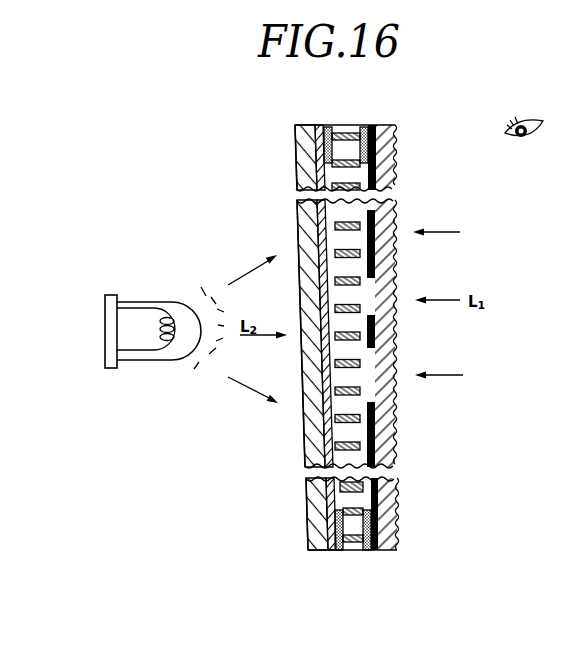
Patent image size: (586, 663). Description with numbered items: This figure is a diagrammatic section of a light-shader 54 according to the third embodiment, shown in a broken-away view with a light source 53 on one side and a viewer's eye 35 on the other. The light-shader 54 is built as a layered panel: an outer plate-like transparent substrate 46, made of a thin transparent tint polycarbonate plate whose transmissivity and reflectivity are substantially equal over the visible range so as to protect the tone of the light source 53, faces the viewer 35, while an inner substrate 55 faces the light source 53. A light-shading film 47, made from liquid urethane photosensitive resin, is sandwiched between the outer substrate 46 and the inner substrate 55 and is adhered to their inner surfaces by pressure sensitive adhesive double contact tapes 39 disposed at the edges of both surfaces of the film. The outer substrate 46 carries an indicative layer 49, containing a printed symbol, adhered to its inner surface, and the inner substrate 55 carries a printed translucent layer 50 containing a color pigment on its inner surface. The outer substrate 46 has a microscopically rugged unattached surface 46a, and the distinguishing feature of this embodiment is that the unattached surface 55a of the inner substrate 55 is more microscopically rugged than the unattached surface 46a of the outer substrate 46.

The observer's eye 35 is at (522, 121).
The pressure sensitive adhesive double contact tapes 39 is at (338, 550).
The outer plate-like transparent substrate 46 is at (388, 498).
The microscopically rugged unattached surface 46a is at (398, 410).
The light-shading film 47 is at (348, 132).
The indicative layer 49 is at (378, 440).
The printed translucent layer 50 is at (309, 483).
The light source 53 is at (153, 306).
The light-shader 54 is at (408, 253).
The inner substrate 55 is at (308, 527).
The unattached surface 55a is at (305, 444).